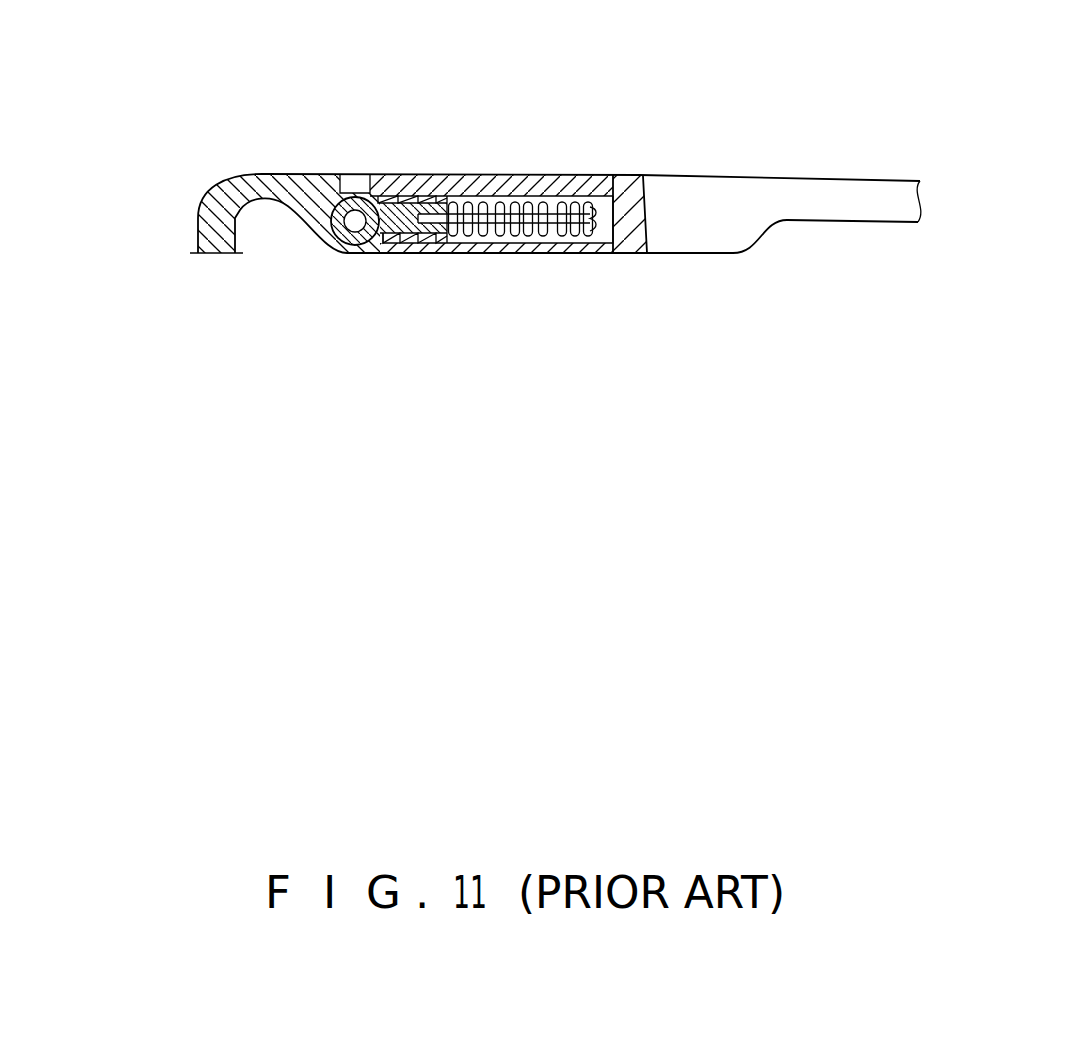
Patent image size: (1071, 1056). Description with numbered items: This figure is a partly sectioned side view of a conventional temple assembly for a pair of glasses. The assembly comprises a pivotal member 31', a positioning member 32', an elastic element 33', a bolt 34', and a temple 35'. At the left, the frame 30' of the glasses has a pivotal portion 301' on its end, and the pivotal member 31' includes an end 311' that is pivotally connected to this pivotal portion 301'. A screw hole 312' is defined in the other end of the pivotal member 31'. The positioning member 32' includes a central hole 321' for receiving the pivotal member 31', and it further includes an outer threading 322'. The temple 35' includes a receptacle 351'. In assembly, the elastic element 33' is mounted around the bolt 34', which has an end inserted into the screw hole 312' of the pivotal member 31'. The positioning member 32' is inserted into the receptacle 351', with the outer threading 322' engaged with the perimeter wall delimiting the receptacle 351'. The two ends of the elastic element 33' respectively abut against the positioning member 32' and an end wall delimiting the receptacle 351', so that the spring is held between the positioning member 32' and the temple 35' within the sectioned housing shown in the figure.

The frame 30' is at (485, 225).
The pivotal portion 301' is at (361, 117).
The screw hole 312' is at (413, 110).
The end 311' is at (328, 285).
The central hole 321' is at (474, 303).
The pivotal member 31' is at (415, 306).
The outer threading 322' is at (446, 322).
The positioning member 32' is at (431, 280).
The elastic element 33' is at (521, 290).
The bolt 34' is at (507, 292).
The receptacle 351' is at (544, 290).
The temple 35' is at (650, 273).